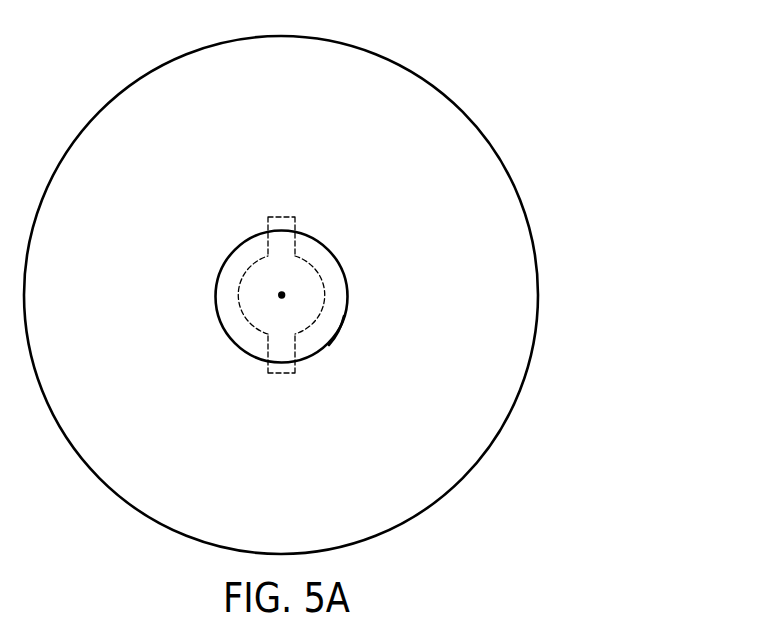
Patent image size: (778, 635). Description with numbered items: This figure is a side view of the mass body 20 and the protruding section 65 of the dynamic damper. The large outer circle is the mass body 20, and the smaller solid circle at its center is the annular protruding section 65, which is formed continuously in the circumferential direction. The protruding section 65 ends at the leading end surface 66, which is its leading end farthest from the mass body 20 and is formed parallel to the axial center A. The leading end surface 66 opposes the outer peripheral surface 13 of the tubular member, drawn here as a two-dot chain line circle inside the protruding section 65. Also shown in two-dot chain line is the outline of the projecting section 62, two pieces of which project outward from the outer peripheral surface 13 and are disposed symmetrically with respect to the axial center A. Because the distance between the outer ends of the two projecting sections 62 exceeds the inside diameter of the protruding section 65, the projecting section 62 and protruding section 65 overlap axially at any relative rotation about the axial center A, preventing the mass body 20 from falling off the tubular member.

The mass body 20 is at (356, 92).
The protruding section 65 is at (327, 244).
The outer peripheral surface 13 is at (258, 266).
The projecting section 62 is at (282, 213).
The leading end surface 66 is at (329, 345).
The axial center A is at (285, 295).